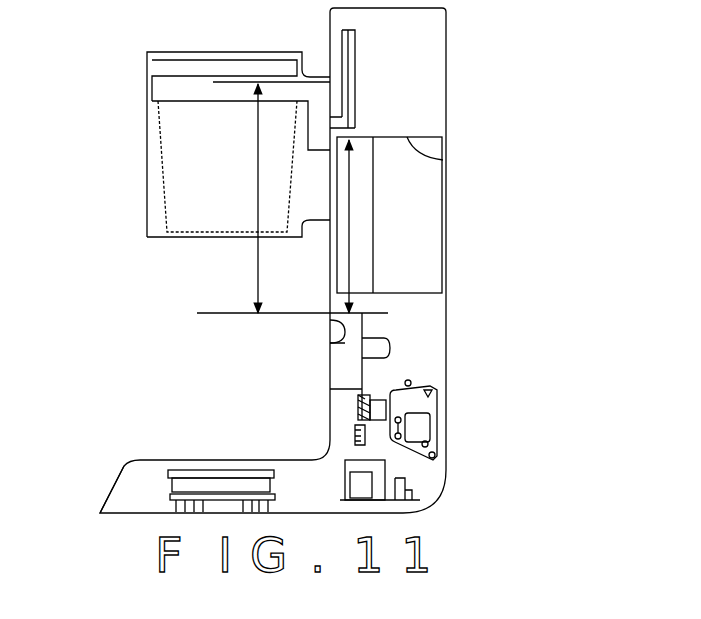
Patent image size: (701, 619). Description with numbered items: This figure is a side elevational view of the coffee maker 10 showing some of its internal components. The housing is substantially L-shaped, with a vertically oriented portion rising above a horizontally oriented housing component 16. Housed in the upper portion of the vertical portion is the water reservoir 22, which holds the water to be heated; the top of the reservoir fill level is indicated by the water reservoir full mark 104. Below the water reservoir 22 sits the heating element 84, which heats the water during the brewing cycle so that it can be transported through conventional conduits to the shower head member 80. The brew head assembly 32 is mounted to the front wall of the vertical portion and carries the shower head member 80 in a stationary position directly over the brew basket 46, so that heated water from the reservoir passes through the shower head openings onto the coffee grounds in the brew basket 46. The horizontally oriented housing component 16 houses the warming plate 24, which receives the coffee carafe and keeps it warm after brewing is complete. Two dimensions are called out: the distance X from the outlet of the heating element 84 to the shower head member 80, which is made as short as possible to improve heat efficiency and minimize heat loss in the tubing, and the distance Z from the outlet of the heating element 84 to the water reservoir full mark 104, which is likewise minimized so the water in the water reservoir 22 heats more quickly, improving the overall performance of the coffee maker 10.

The coffee maker 10 is at (472, 97).
The shower head member 80 is at (200, 90).
The brew basket 46 is at (220, 153).
The brew head assembly 32 is at (135, 131).
The distance X is at (255, 200).
The heating element 84 is at (342, 344).
The water reservoir full mark 104 is at (443, 160).
The water reservoir 22 is at (415, 220).
The distance Z is at (350, 253).
The warming plate 24 is at (178, 491).
The horizontally oriented housing component 16 is at (138, 507).